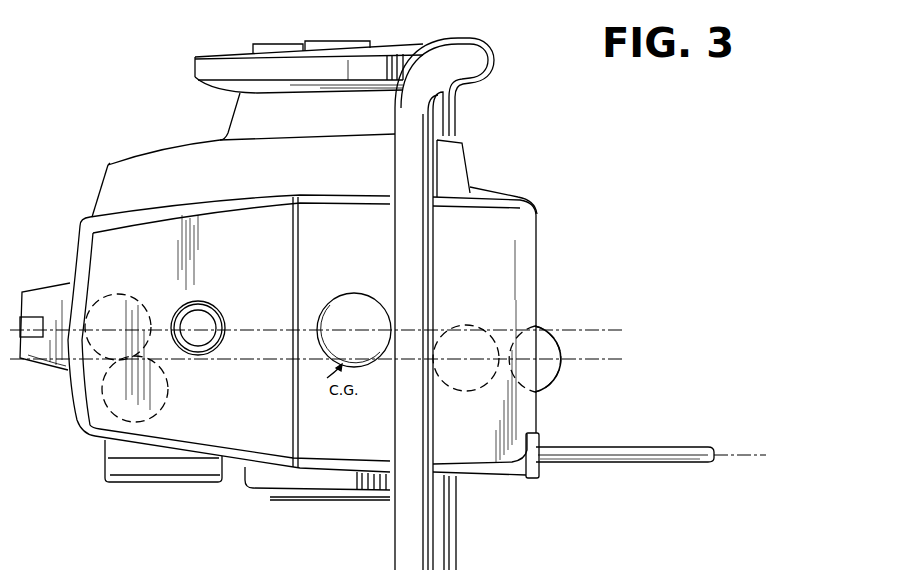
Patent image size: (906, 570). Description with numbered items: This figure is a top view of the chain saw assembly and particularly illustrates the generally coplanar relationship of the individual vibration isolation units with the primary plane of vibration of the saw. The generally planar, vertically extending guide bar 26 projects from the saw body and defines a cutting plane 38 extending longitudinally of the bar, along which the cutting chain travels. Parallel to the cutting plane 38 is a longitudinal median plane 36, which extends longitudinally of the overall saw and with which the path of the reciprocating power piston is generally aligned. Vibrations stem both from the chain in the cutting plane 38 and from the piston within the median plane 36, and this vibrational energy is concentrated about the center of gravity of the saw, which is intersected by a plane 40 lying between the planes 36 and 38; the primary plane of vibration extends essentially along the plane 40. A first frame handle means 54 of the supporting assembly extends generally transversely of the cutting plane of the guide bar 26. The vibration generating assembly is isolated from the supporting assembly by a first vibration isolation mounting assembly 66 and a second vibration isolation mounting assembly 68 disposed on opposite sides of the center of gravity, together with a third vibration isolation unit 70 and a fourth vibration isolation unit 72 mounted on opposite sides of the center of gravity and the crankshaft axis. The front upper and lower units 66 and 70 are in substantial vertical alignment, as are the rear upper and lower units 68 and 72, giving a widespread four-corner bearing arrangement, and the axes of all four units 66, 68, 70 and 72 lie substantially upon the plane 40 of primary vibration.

The guide bar 26 is at (660, 447).
The longitudinal median plane 36 is at (603, 331).
The cutting plane 38 is at (742, 455).
The plane of primary vibration 40 is at (617, 359).
The frame handle means 54 is at (388, 569).
The first vibration isolation mounting assembly 66 is at (547, 380).
The second vibration isolation mounting assembly 68 is at (169, 401).
The third vibration isolation unit 70 is at (493, 303).
The fourth vibration isolation unit 72 is at (116, 292).